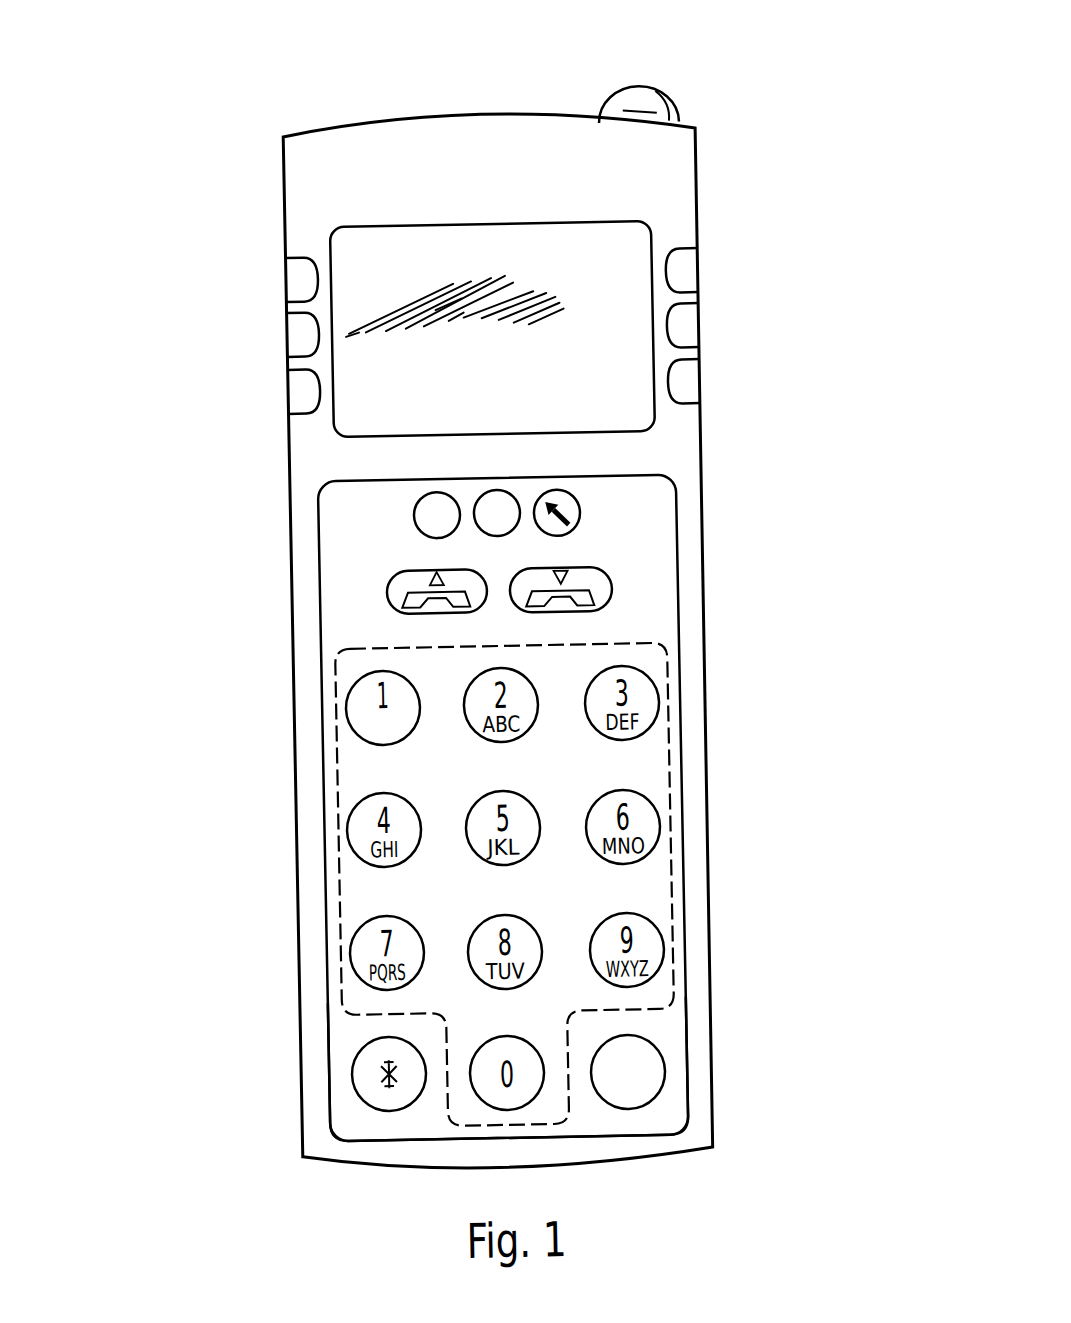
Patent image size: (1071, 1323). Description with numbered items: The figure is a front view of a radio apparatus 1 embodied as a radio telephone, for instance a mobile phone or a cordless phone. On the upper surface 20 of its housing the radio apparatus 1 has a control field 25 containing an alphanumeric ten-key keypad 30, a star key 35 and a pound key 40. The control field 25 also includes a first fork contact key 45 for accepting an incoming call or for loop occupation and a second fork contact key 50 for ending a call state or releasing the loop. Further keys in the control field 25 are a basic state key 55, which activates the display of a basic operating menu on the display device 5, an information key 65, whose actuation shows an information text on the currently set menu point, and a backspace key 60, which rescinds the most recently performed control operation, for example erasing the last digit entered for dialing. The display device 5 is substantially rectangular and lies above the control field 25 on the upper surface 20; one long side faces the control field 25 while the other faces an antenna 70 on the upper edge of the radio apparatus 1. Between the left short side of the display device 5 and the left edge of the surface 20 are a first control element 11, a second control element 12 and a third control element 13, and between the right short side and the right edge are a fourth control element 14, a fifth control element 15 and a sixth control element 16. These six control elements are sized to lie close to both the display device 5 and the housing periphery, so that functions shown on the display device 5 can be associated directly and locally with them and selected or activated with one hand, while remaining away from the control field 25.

The radio apparatus 1 is at (707, 814).
The display device 5 is at (626, 252).
The first control element 11 is at (307, 278).
The second control element 12 is at (309, 327).
The third control element 13 is at (305, 381).
The fourth control element 14 is at (692, 276).
The fifth control element 15 is at (694, 332).
The sixth control element 16 is at (695, 387).
The upper surface 20 is at (697, 639).
The control field 25 is at (680, 891).
The alphanumeric 10-key keypad 30 is at (670, 743).
The star key 35 is at (355, 1072).
The pound key 40 is at (637, 1073).
The first fork contact key 45 is at (398, 585).
The second fork contact key 50 is at (606, 589).
The basic state key 55 is at (422, 514).
The backspace key 60 is at (576, 508).
The information key 65 is at (510, 502).
The antenna 70 is at (642, 100).